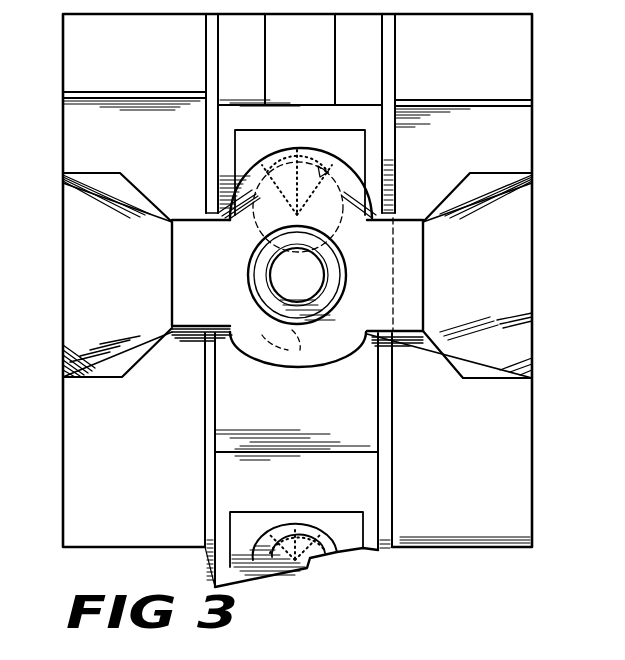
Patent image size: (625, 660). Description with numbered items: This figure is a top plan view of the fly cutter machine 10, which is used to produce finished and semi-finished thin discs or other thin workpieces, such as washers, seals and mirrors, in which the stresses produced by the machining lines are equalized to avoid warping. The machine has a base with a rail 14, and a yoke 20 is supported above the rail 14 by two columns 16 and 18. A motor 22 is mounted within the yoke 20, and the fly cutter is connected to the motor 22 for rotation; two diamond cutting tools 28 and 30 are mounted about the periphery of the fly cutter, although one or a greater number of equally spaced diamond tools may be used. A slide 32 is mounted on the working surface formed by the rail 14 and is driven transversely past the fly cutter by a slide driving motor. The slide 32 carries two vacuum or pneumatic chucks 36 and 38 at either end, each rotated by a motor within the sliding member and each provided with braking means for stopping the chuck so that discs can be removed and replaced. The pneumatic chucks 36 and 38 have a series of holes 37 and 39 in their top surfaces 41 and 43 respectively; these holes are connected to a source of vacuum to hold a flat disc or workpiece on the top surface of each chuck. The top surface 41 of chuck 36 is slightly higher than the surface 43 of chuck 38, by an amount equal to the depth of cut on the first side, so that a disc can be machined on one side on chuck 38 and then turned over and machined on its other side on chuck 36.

The fly cutter machine 10 is at (441, 567).
The rail 14 is at (459, 476).
The column 16 is at (481, 282).
The column 18 is at (113, 289).
The yoke 20 is at (383, 279).
The motor 22 is at (258, 268).
The diamond cutting tool 28 is at (298, 325).
The diamond cutting tool 30 is at (301, 184).
The slide 32 is at (375, 551).
The pneumatic chuck 36 is at (332, 545).
The holes 37 is at (289, 572).
The pneumatic chuck 38 is at (256, 186).
The holes 39 is at (299, 186).
The top surface 41 is at (286, 533).
The top surface 43 is at (338, 171).